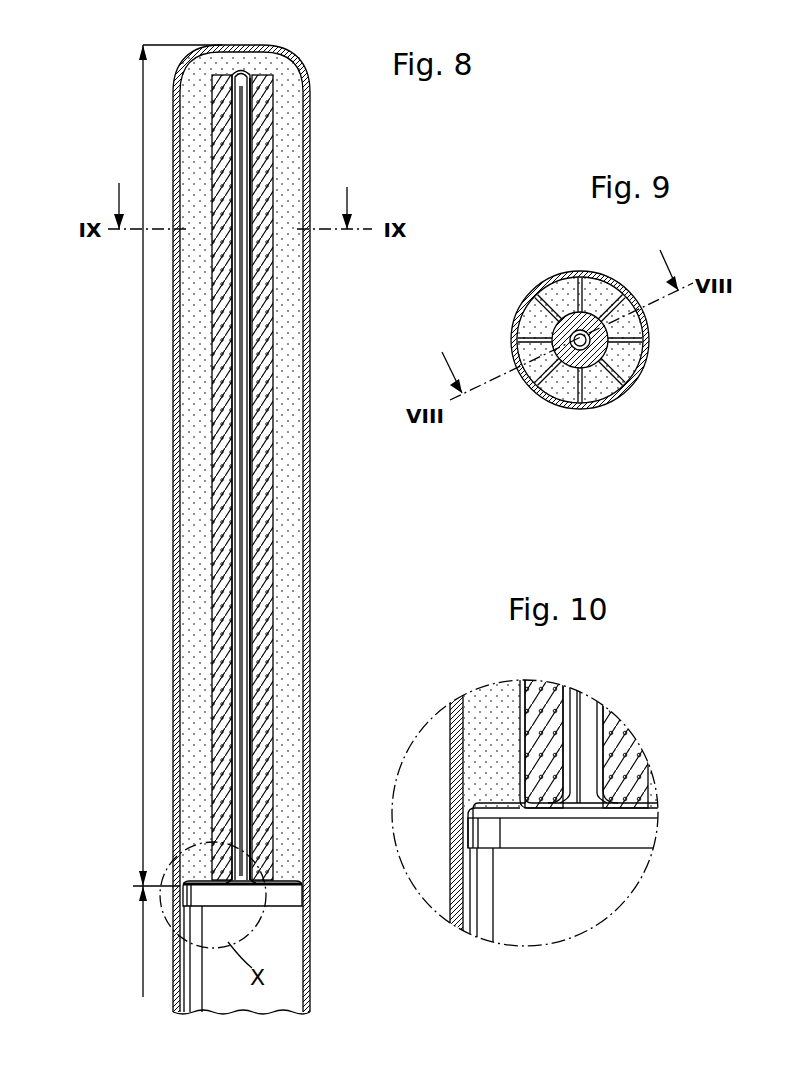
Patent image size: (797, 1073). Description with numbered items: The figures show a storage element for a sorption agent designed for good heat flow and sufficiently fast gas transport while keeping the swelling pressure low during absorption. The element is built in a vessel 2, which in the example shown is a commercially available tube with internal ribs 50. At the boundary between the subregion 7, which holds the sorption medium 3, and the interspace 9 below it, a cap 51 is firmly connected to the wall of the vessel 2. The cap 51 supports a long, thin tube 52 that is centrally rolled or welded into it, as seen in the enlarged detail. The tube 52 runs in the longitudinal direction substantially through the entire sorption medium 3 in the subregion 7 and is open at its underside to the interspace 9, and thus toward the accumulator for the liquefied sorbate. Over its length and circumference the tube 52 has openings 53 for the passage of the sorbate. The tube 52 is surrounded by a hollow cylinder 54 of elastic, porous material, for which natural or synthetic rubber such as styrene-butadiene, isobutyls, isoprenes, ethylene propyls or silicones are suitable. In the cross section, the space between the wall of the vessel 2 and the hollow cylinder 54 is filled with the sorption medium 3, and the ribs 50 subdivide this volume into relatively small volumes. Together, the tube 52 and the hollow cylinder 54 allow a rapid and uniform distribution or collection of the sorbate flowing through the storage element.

In FIG. 8, the vessel 2 is at (310, 152).
In FIG. 9, the vessel 2 is at (553, 406).
In FIG. 10, the vessel 2 is at (455, 905).
In FIG. 8, the sorption medium 3 is at (287, 110).
In FIG. 9, the sorption medium 3 is at (598, 402).
In FIG. 10, the sorption medium 3 is at (487, 700).
In FIG. 8, the subregion 7 is at (143, 513).
In FIG. 8, the interspace 9 is at (143, 965).
In FIG. 9, the internal ribs 50 is at (608, 306).
In FIG. 8, the cap 51 is at (300, 900).
In FIG. 10, the cap 51 is at (470, 835).
In FIG. 8, the tube 52 is at (250, 603).
In FIG. 9, the tube 52 is at (573, 336).
In FIG. 10, the tube 52 is at (572, 705).
In FIG. 8, the openings 53 is at (252, 372).
In FIG. 8, the hollow cylinder 54 is at (262, 712).
In FIG. 9, the hollow cylinder 54 is at (600, 350).
In FIG. 10, the hollow cylinder 54 is at (622, 725).